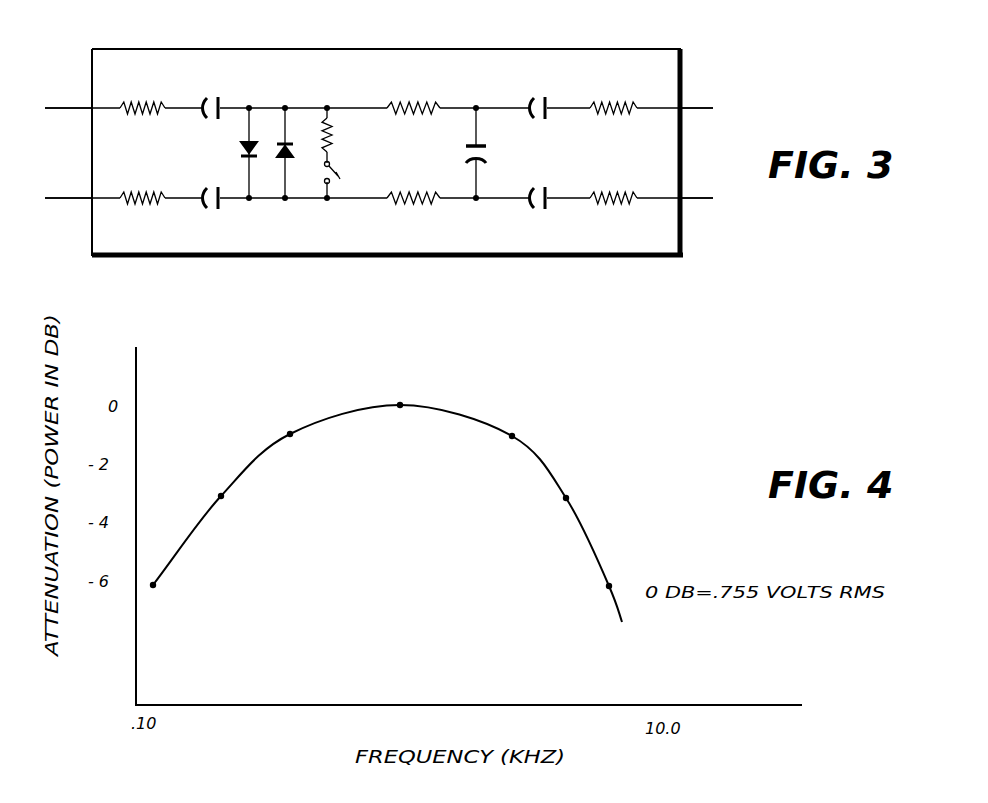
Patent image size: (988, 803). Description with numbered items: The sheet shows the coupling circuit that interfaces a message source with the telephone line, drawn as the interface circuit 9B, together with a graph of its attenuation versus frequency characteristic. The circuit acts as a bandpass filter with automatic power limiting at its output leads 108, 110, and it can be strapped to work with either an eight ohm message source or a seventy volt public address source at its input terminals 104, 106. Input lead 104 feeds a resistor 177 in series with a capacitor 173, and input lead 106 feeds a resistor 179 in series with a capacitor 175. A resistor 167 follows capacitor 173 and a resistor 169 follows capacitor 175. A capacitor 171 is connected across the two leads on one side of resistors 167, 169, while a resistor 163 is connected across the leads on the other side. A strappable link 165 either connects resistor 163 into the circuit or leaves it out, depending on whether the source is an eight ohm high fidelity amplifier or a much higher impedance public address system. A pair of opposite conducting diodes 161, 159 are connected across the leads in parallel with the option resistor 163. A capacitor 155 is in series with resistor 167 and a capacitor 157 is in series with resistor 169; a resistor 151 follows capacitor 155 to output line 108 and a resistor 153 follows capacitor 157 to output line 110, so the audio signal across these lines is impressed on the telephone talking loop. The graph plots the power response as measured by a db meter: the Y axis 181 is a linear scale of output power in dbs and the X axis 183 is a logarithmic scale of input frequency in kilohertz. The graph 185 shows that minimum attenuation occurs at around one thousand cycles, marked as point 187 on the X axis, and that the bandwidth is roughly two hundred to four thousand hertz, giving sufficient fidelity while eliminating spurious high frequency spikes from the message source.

In FIG. 3, the filter circuit enclosure 9B is at (392, 49).
In FIG. 3, the input terminal 104 is at (698, 108).
In FIG. 3, the input terminal 106 is at (690, 200).
In FIG. 3, the output lead 108 is at (60, 108).
In FIG. 3, the output lead 110 is at (70, 198).
In FIG. 3, the resistor 151 is at (152, 108).
In FIG. 3, the resistor 153 is at (157, 198).
In FIG. 3, the capacitor 155 is at (211, 100).
In FIG. 3, the capacitor 157 is at (212, 208).
In FIG. 3, the diode 159 is at (244, 146).
In FIG. 3, the diode 161 is at (280, 152).
In FIG. 3, the resistor 163 is at (332, 135).
In FIG. 3, the strappable link 165 is at (336, 174).
In FIG. 3, the resistor 167 is at (416, 108).
In FIG. 3, the resistor 169 is at (413, 200).
In FIG. 3, the capacitor 171 is at (490, 153).
In FIG. 3, the capacitor 173 is at (538, 100).
In FIG. 3, the capacitor 175 is at (537, 208).
In FIG. 3, the resistor 177 is at (640, 106).
In FIG. 3, the resistor 179 is at (634, 204).
In FIG. 4, the Y axis 181 is at (136, 680).
In FIG. 4, the X axis 183 is at (741, 706).
In FIG. 4, the graph 185 is at (458, 412).
In FIG. 4, the point 187 is at (400, 704).